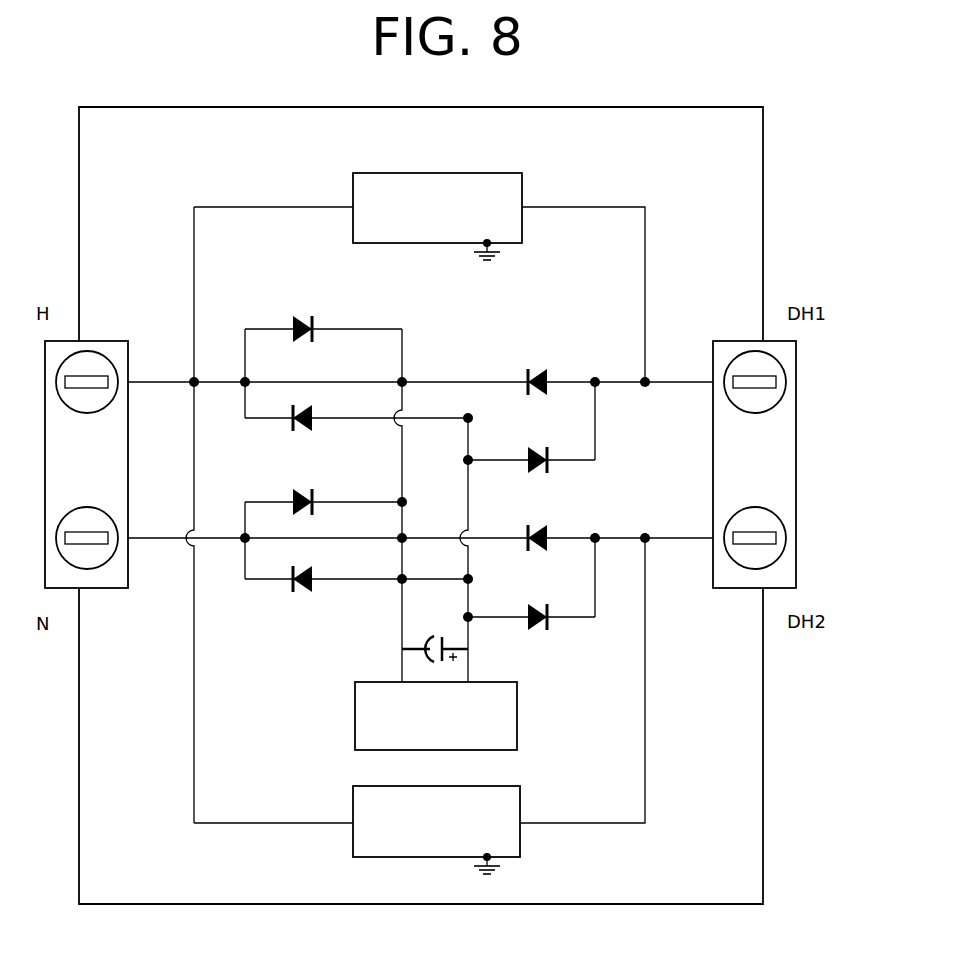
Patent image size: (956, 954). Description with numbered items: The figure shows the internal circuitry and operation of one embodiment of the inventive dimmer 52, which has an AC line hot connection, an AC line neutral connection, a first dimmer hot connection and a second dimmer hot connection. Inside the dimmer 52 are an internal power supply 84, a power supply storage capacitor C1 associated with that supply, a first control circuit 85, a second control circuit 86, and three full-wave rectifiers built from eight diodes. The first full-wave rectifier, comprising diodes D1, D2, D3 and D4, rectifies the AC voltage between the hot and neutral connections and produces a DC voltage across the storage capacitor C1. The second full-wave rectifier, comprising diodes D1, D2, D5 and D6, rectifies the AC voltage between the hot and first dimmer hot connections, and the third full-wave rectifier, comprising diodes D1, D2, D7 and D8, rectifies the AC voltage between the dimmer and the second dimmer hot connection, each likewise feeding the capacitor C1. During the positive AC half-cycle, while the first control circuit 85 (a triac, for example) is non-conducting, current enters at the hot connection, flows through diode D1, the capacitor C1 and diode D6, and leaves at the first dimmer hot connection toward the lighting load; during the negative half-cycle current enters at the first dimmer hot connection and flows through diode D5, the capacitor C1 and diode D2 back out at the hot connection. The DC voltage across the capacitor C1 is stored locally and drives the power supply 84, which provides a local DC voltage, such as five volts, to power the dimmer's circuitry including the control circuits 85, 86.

The dimmer 52 is at (763, 855).
The power supply 84 is at (517, 703).
The first control circuit 85 is at (522, 227).
The second control circuit 86 is at (520, 789).
The diode D1 is at (323, 314).
The diode D2 is at (356, 403).
The diode D3 is at (323, 487).
The diode D4 is at (356, 595).
The diode D5 is at (537, 361).
The diode D6 is at (531, 442).
The diode D7 is at (537, 521).
The diode D8 is at (531, 635).
The power supply storage capacitor C1 is at (435, 636).